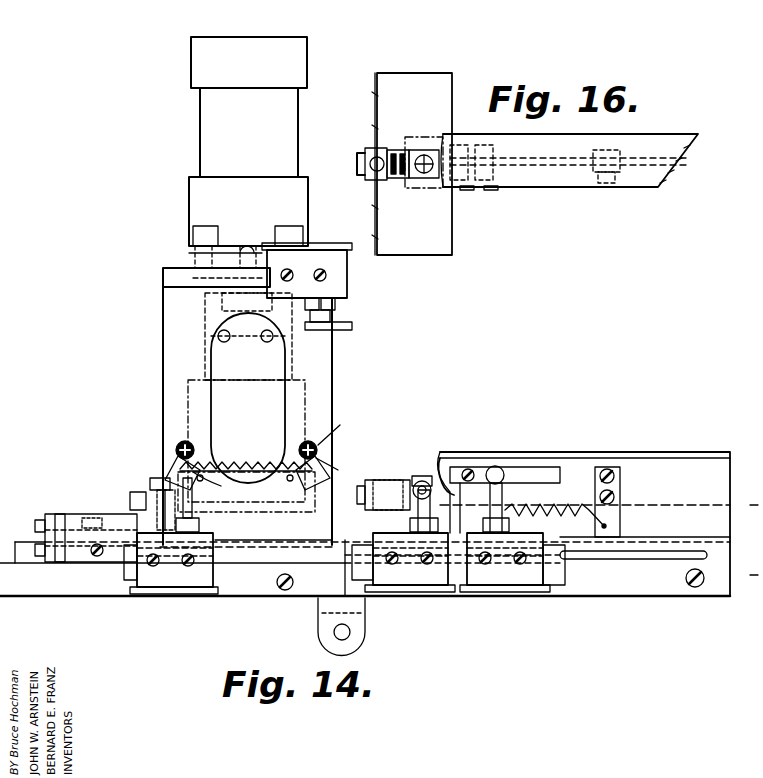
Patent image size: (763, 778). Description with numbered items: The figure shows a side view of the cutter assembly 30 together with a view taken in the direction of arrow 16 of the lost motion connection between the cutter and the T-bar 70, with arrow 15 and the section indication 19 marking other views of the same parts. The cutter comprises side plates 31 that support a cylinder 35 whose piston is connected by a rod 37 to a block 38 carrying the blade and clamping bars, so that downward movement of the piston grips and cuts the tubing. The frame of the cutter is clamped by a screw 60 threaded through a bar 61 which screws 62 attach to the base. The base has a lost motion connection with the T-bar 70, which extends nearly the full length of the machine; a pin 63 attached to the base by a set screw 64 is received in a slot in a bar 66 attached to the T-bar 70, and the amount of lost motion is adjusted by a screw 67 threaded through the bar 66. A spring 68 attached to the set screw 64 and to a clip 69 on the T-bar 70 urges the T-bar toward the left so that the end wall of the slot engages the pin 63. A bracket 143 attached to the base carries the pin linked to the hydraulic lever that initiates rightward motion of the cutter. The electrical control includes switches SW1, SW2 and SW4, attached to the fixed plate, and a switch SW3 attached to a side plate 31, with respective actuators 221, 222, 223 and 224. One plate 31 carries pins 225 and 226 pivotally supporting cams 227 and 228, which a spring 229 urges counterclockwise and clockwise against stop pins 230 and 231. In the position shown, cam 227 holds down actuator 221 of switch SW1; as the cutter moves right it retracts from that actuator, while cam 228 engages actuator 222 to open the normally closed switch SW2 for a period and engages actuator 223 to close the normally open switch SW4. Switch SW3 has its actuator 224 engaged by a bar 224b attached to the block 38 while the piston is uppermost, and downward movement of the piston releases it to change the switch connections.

In FIG. 14, the Fig. 19 section line 19 is at (237, 57).
In FIG. 14, the cylinder 35 is at (206, 145).
In FIG. 14, the cutter assembly 30 is at (108, 299).
In FIG. 14, the rod 37 is at (216, 278).
In FIG. 14, the block 38 is at (212, 321).
In FIG. 14, the side plates 31 is at (320, 390).
In FIG. 14, the actuator 224 is at (332, 312).
In FIG. 14, the bar 224b is at (352, 326).
In FIG. 14, the view arrow 15 is at (385, 348).
In FIG. 14, the view arrow 16 is at (445, 388).
In FIG. 14, the pin 225 is at (178, 447).
In FIG. 14, the pin 226 is at (332, 447).
In FIG. 14, the spring 229 is at (264, 462).
In FIG. 14, the stop pin 230 is at (246, 492).
In FIG. 14, the stop pin 231 is at (288, 477).
In FIG. 14, the cam 227 is at (196, 486).
In FIG. 14, the cam 228 is at (344, 464).
In FIG. 14, the actuator 221 is at (190, 502).
In FIG. 14, the actuator 222 is at (416, 508).
In FIG. 14, the actuator 223 is at (505, 492).
In FIG. 14, the screws 62 is at (155, 477).
In FIG. 14, the bar 61 is at (156, 492).
In FIG. 14, the screw 60 is at (130, 500).
In FIG. 14, the screw 67 is at (356, 500).
In FIG. 16, the screw 67 is at (356, 162).
In FIG. 14, the pin 63 is at (418, 480).
In FIG. 16, the pin 63 is at (400, 148).
In FIG. 14, the bar 66 is at (441, 465).
In FIG. 16, the bar 66 is at (438, 176).
In FIG. 14, the set screw 64 is at (478, 541).
In FIG. 14, the spring 68 is at (578, 512).
In FIG. 14, the clip 69 is at (620, 488).
In FIG. 16, the clip 69 is at (622, 186).
In FIG. 14, the T-bar 70 is at (670, 452).
In FIG. 16, the T-bar 70 is at (560, 183).
In FIG. 14, the bracket 143 is at (323, 630).
In FIG. 14, the switch SW1 is at (160, 598).
In FIG. 14, the switch SW2 is at (412, 592).
In FIG. 14, the switch SW3 is at (347, 278).
In FIG. 14, the switch SW4 is at (503, 592).